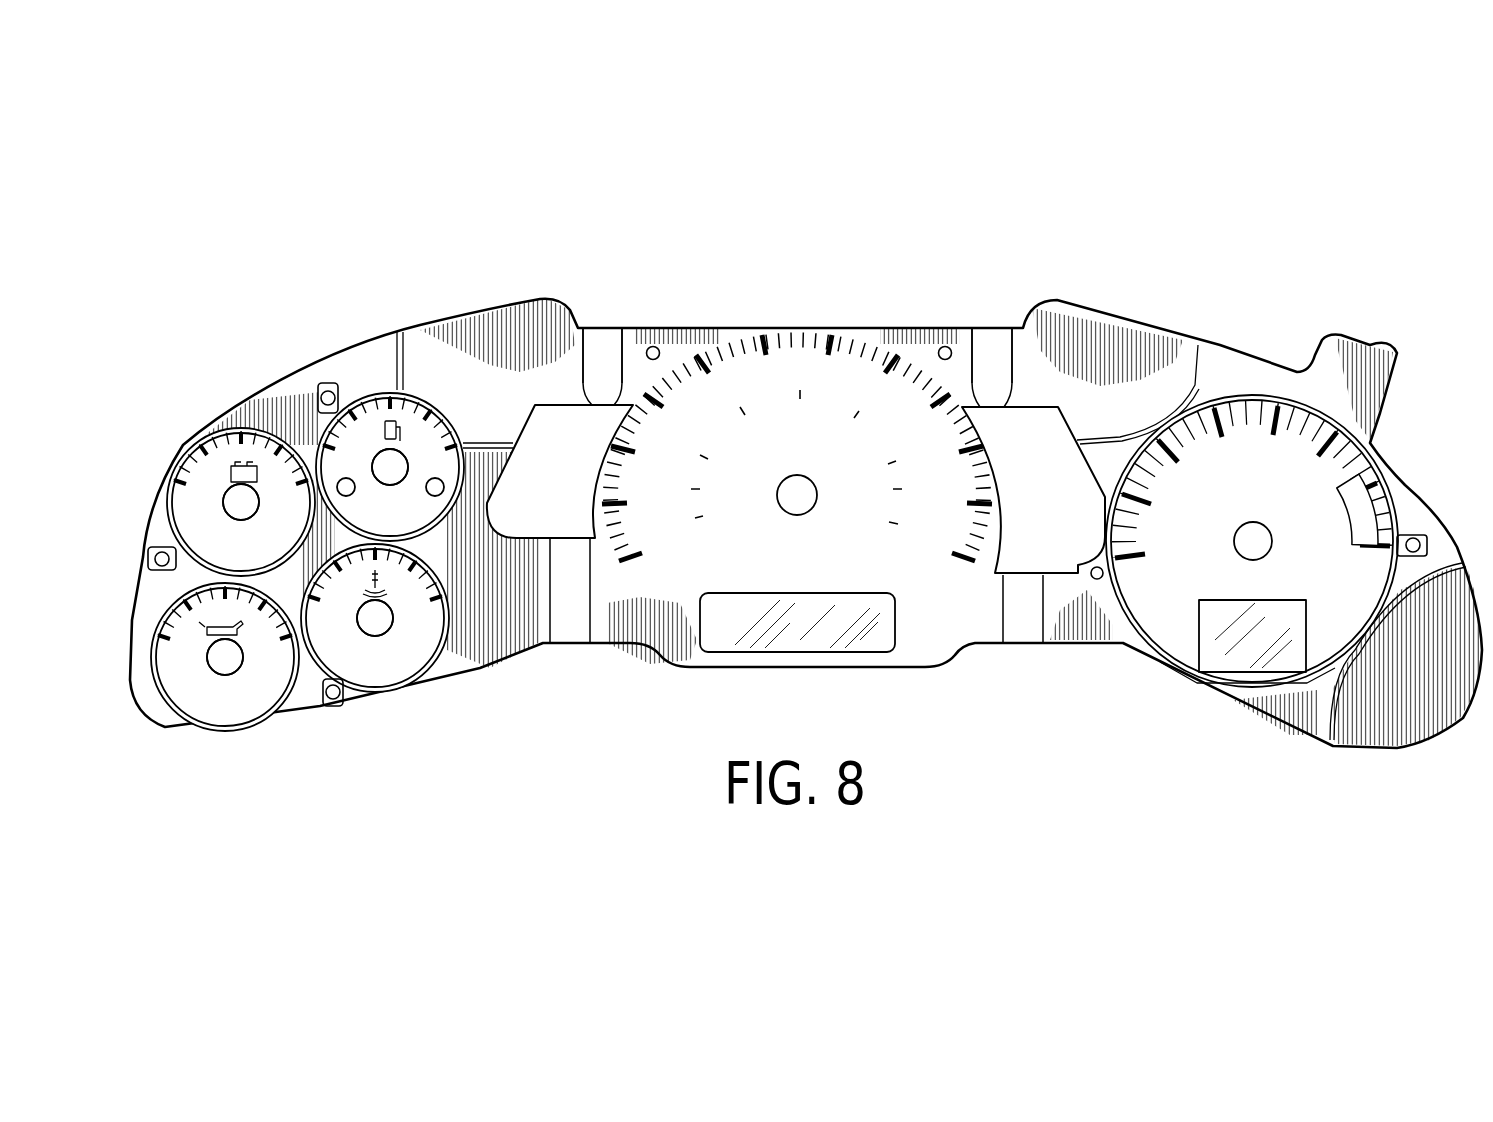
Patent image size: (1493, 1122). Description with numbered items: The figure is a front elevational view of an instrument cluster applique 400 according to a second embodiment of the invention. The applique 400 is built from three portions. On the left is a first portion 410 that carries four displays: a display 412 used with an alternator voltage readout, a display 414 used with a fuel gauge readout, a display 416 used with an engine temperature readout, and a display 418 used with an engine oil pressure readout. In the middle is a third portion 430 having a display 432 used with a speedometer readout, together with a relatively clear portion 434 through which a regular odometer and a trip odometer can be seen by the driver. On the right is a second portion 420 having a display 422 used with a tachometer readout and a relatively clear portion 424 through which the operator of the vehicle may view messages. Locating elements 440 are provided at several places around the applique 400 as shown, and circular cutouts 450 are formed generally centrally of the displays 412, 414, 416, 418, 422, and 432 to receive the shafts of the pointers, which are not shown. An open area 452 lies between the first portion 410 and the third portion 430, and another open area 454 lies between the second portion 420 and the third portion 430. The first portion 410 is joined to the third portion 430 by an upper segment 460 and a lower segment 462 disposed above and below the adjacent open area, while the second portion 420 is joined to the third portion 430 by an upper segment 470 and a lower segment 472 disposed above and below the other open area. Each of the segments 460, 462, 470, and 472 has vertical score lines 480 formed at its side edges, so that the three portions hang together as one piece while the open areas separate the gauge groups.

The applique 400 is at (883, 226).
The first portion 410 is at (290, 418).
The display 412 is at (215, 470).
The display 414 is at (422, 432).
The display 416 is at (413, 653).
The display 418 is at (257, 700).
The second portion 420 is at (1252, 516).
The display 422 is at (1175, 607).
The relatively clear portion 424 is at (1227, 657).
The third portion 430 is at (797, 481).
The display 432 is at (866, 362).
The relatively clear portion 434 is at (790, 630).
The locating elements 440 is at (329, 390).
The circular cutouts 450 is at (239, 497).
The open area 452 is at (535, 505).
The open area 454 is at (1060, 478).
The upper segment 460 is at (603, 345).
The lower segment 462 is at (573, 583).
The upper segment 470 is at (995, 345).
The lower segment 472 is at (1020, 600).
The vertical score lines 480 is at (586, 407).